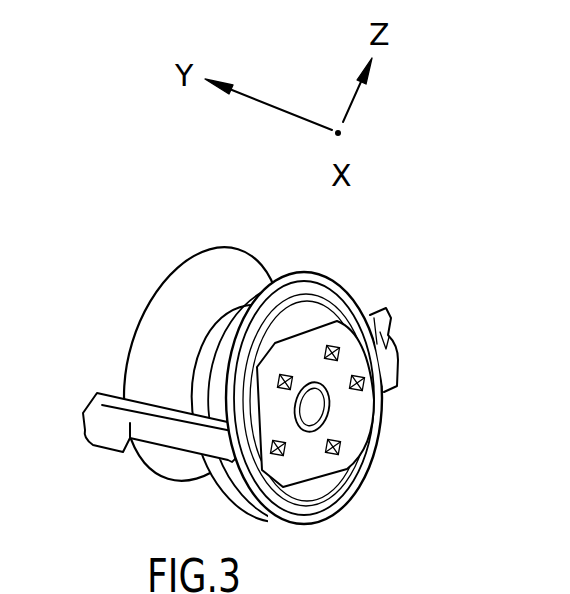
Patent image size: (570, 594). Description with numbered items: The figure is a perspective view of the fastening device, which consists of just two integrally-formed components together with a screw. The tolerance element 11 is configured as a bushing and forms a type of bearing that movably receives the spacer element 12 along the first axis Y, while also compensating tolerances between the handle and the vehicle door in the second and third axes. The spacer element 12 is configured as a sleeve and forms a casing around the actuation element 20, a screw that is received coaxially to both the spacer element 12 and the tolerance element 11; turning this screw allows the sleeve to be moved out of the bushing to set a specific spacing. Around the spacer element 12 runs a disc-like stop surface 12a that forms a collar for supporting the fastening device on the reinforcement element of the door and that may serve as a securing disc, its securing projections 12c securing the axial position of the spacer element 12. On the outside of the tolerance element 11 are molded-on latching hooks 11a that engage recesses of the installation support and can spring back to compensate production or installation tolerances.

The tolerance element 11 is at (211, 358).
The latching hooks 11a is at (100, 427).
The spacer element 12 is at (348, 358).
The stop surface 12a is at (355, 423).
The securing projections 12c is at (337, 345).
The actuation element 20 is at (188, 315).